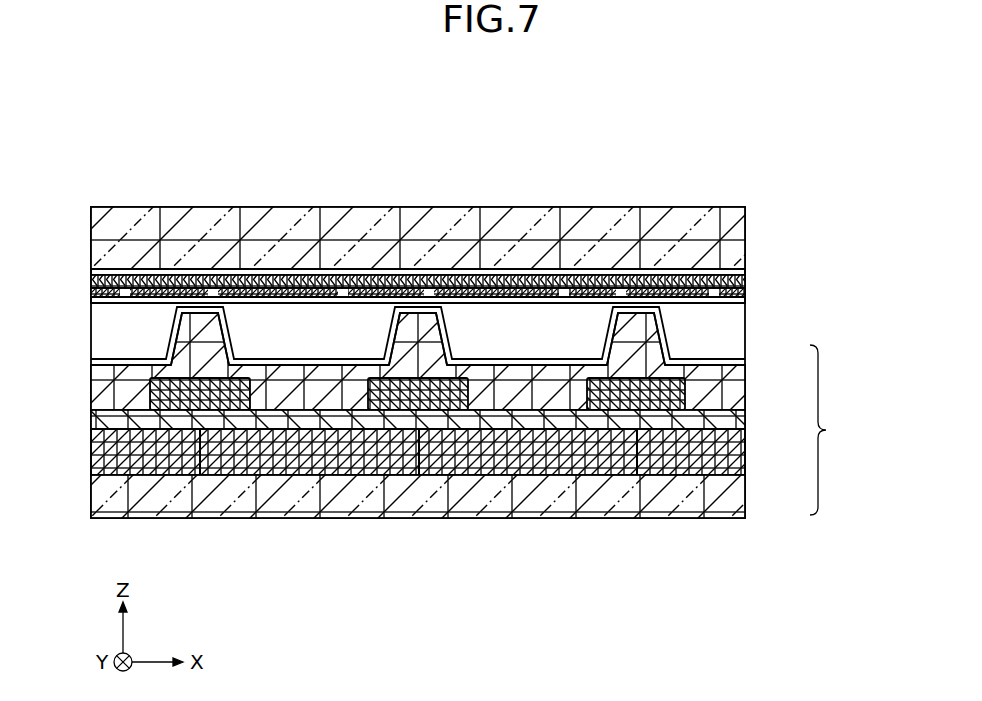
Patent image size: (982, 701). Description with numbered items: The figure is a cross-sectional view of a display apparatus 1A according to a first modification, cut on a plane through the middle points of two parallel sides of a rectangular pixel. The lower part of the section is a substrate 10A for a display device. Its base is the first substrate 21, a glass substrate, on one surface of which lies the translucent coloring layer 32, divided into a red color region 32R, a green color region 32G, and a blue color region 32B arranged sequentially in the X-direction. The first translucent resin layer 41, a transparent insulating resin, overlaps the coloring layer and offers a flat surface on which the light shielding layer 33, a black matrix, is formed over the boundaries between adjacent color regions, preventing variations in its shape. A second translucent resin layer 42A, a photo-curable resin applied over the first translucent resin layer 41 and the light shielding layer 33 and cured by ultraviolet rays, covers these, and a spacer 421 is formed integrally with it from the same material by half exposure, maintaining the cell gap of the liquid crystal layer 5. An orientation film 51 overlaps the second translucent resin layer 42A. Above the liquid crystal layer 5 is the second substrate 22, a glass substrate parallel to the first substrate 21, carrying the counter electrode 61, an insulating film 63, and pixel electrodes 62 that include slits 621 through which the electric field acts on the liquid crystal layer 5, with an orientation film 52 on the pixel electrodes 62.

The display apparatus 1A is at (676, 130).
The second substrate 22 is at (732, 222).
The counter electrode 61 is at (742, 272).
The insulating film 63 is at (742, 283).
The pixel electrode 62 is at (139, 292).
The slit 621 is at (495, 288).
The orientation film 52 is at (745, 297).
The liquid crystal layer 5 is at (730, 335).
The orientation film 51 is at (745, 360).
The second translucent resin layer 42A is at (730, 385).
The spacer 421 is at (201, 323).
The light shielding layer 33 is at (603, 398).
The first translucent resin layer 41 is at (730, 420).
The translucent coloring layer 32 is at (730, 455).
The color region 32R is at (145, 455).
The color region 32G is at (320, 455).
The color region 32B is at (525, 455).
The first substrate 21 is at (730, 497).
The substrate for a display device 10A is at (843, 430).